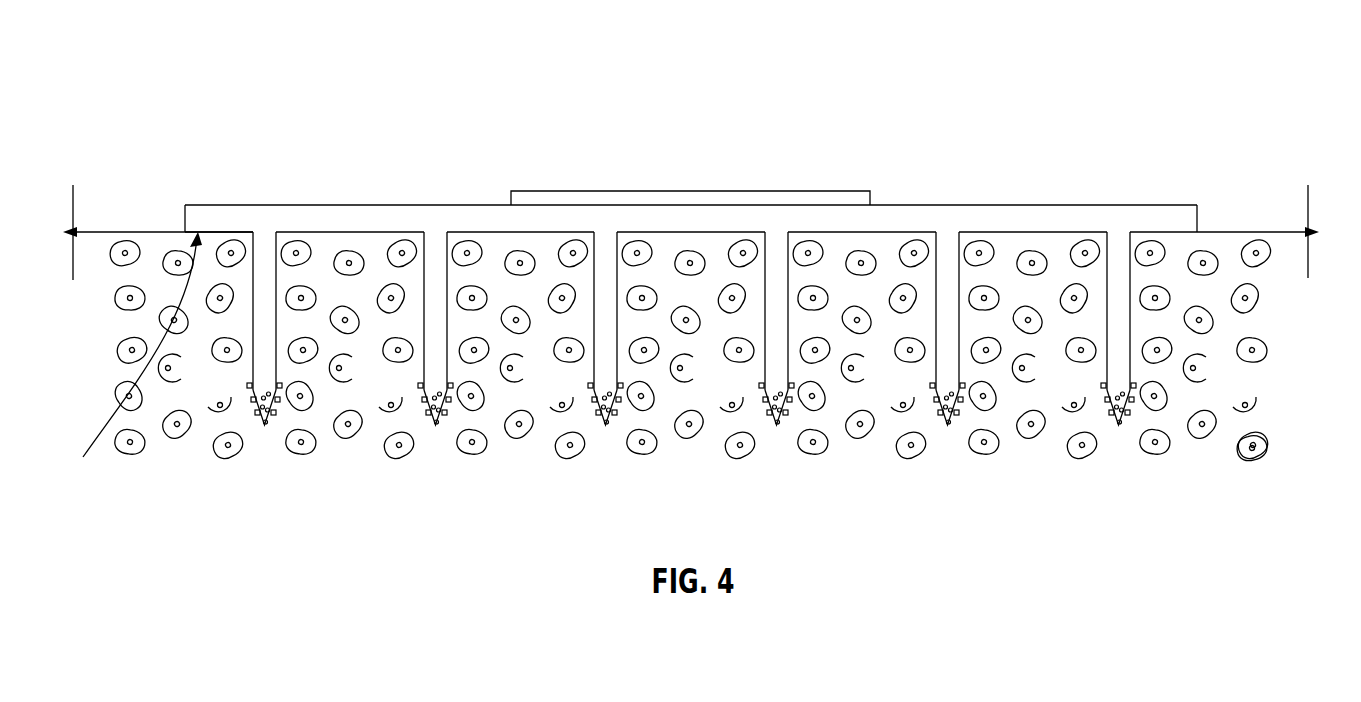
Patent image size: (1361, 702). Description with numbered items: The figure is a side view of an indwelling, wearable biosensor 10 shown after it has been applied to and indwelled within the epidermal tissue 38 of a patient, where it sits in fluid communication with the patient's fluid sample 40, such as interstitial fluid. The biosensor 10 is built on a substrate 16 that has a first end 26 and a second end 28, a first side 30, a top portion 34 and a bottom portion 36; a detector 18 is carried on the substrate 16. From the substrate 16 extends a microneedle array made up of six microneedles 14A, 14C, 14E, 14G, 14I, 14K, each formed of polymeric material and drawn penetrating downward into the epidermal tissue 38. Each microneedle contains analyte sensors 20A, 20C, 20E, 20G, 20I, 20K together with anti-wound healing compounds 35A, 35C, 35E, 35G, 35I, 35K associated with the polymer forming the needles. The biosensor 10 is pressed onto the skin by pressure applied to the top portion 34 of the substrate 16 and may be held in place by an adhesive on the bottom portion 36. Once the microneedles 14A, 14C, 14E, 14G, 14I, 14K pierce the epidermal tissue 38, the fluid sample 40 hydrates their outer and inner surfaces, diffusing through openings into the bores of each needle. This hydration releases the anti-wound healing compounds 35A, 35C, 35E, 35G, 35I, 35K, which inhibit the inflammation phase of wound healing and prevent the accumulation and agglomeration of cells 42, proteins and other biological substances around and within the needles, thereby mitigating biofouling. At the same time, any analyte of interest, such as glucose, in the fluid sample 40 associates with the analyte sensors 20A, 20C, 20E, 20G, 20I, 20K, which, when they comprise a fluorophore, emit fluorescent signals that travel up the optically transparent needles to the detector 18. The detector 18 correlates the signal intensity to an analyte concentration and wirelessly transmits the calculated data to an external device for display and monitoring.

The indwelling, wearable biosensor 10 is at (247, 60).
The substrate 16 is at (694, 176).
The detector 18 is at (695, 197).
The first end 26 is at (184, 219).
The second end 28 is at (1198, 218).
The first side 30 is at (247, 217).
The top portion 34 is at (327, 204).
The bottom portion 36 is at (135, 364).
The epidermal tissue 38 is at (117, 231).
The fluid sample 40 is at (828, 410).
The cells 42 is at (1266, 449).
The microneedle 14A is at (253, 317).
The microneedle 14C is at (424, 317).
The microneedle 14E is at (594, 317).
The microneedle 14G is at (765, 317).
The microneedle 14I is at (936, 317).
The microneedle 14K is at (1107, 317).
The analyte sensor 20A is at (264, 425).
The analyte sensor 20C is at (436, 425).
The analyte sensor 20E is at (606, 425).
The analyte sensor 20G is at (776, 425).
The analyte sensor 20I is at (948, 425).
The analyte sensor 20K is at (1118, 425).
The anti-wound healing compound 35A is at (264, 425).
The anti-wound healing compound 35C is at (436, 425).
The anti-wound healing compound 35E is at (606, 425).
The anti-wound healing compound 35G is at (776, 425).
The anti-wound healing compound 35I is at (948, 425).
The anti-wound healing compound 35K is at (1118, 425).